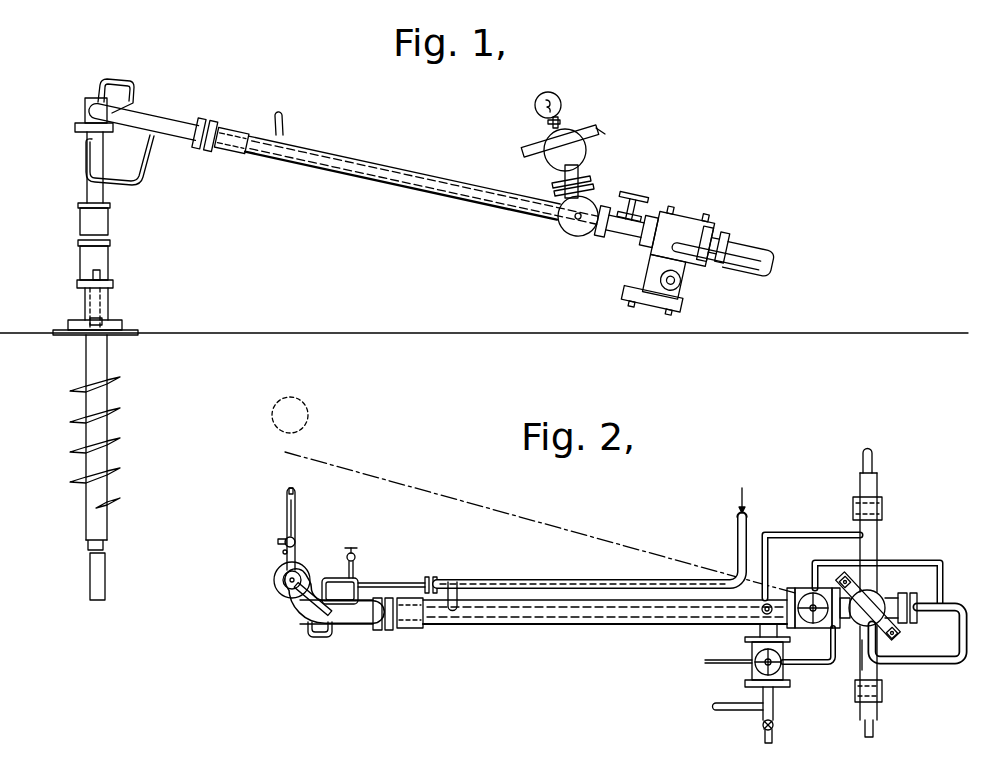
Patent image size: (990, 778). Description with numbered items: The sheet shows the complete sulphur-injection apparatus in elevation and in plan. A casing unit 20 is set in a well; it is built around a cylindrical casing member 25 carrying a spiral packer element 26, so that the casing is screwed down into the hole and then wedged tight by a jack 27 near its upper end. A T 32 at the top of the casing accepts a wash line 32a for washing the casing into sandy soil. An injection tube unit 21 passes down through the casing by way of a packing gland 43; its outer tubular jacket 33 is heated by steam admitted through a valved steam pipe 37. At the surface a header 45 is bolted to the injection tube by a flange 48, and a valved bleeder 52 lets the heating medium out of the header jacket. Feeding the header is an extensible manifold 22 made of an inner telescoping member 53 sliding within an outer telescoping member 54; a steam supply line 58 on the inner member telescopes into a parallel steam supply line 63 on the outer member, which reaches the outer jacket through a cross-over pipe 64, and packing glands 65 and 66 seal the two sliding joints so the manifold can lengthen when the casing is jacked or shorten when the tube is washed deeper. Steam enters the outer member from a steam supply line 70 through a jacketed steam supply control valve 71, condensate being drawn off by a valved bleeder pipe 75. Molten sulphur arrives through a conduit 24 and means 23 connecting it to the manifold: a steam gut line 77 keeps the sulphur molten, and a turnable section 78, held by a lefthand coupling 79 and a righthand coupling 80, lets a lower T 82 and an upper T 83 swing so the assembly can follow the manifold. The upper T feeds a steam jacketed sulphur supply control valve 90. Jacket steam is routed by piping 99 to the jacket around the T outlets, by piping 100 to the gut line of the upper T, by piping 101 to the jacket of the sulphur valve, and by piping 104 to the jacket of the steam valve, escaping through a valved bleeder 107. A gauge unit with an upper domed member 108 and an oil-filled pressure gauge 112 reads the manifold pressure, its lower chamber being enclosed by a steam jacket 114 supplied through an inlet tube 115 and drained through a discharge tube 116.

In FIG. 1, the casing unit 20 is at (110, 352).
In FIG. 1, the injection tube unit 21 is at (88, 187).
In FIG. 1, the extensible manifold 22 is at (303, 152).
In FIG. 2, the extensible manifold 22 is at (490, 614).
In FIG. 1, the means connecting the manifold with a conduit 23 is at (703, 217).
In FIG. 2, the means connecting the manifold with a conduit 23 is at (868, 603).
In FIG. 1, the conduit 24 is at (657, 282).
In FIG. 2, the conduit 24 is at (880, 487).
In FIG. 1, the cylindrical casing member 25 is at (107, 423).
In FIG. 1, the spiral packer element 26 is at (112, 405).
In FIG. 1, the jack 27 is at (112, 288).
In FIG. 1, the T 32 is at (98, 258).
In FIG. 2, the wash line 32a is at (297, 495).
In FIG. 1, the tubular jacket 33 is at (88, 571).
In FIG. 1, the valved steam pipe 37 is at (143, 167).
In FIG. 2, the valved steam pipe 37 is at (355, 570).
In FIG. 1, the packing gland 43 is at (112, 203).
In FIG. 1, the header 45 is at (88, 103).
In FIG. 2, the header 45 is at (300, 580).
In FIG. 2, the flange 48 is at (273, 577).
In FIG. 2, the valved bleeder 52 is at (293, 527).
In FIG. 1, the inner telescoping member 53 is at (165, 113).
In FIG. 2, the inner telescoping member 53 is at (305, 613).
In FIG. 1, the outer telescoping member 54 is at (393, 162).
In FIG. 2, the outer telescoping member 54 is at (522, 626).
In FIG. 2, the steam supply line 58 is at (393, 583).
In FIG. 2, the steam supply line 63 is at (503, 580).
In FIG. 1, the cross-over pipe 64 is at (282, 113).
In FIG. 2, the cross-over pipe 64 is at (456, 581).
In FIG. 2, the packing gland 65 is at (385, 631).
In FIG. 2, the packing gland 66 is at (430, 577).
In FIG. 2, the steam supply line 70 is at (720, 703).
In FIG. 2, the steam supply control valve 71 is at (780, 676).
In FIG. 2, the valved bleeder pipe 75 is at (775, 717).
In FIG. 2, the steam gut line 77 is at (875, 460).
In FIG. 2, the turnable section 78 is at (878, 673).
In FIG. 2, the coupling 79 is at (883, 695).
In FIG. 2, the coupling 80 is at (883, 510).
In FIG. 1, the lower T 82 is at (685, 281).
In FIG. 1, the upper T 83 is at (675, 226).
In FIG. 2, the upper T 83 is at (892, 597).
In FIG. 1, the sulphur supply control valve 90 is at (625, 232).
In FIG. 2, the sulphur supply control valve 90 is at (803, 581).
In FIG. 2, the piping 99 is at (808, 531).
In FIG. 1, the piping 100 is at (774, 270).
In FIG. 2, the piping 100 is at (933, 666).
In FIG. 2, the piping 101 is at (930, 562).
In FIG. 2, the piping 104 is at (818, 665).
In FIG. 2, the valved bleeder 107 is at (722, 660).
In FIG. 1, the upper domed member 108 is at (577, 127).
In FIG. 1, the oil-filled pressure gauge 112 is at (560, 107).
In FIG. 1, the steam jacket 114 is at (535, 155).
In FIG. 1, the inlet tube 115 is at (603, 132).
In FIG. 1, the discharge tube 116 is at (555, 180).